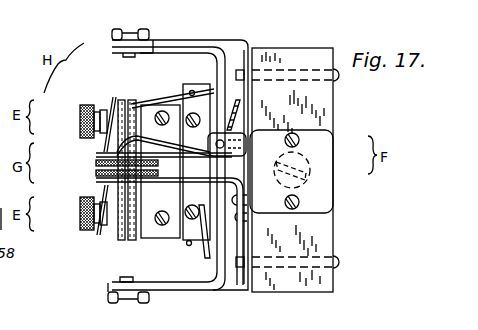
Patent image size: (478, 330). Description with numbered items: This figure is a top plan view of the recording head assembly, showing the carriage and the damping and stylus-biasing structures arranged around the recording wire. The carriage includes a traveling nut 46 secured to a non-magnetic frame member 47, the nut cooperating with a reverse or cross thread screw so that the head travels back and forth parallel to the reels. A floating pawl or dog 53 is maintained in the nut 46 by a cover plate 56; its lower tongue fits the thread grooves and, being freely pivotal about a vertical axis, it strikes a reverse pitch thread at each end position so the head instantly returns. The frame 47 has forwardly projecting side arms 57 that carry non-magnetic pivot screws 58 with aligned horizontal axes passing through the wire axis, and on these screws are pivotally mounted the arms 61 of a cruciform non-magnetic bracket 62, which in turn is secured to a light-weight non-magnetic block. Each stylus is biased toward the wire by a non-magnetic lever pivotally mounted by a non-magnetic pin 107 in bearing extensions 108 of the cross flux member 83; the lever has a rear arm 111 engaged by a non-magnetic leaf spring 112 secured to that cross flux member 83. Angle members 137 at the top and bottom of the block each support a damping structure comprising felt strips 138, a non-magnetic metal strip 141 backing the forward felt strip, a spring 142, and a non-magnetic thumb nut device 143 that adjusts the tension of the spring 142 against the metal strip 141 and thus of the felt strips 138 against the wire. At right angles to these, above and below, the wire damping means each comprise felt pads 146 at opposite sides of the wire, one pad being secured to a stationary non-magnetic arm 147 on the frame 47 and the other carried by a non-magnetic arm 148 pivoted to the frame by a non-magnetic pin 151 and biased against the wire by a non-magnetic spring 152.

The traveling nut 46 is at (338, 110).
The non-magnetic frame member 47 is at (251, 250).
The floating pawl or dog 53 is at (305, 158).
The cover plate 56 is at (322, 183).
The side arms 57 is at (184, 40).
The non-magnetic pivot screws 58 is at (112, 34).
The arms 61 is at (175, 53).
The cruciform non-magnetic bracket 62 is at (214, 62).
The cross flux member 83 is at (214, 228).
The non-magnetic pin 107 is at (195, 93).
The bearing extensions 108 is at (186, 251).
The rear arm 111 is at (201, 241).
The non-magnetic leaf spring 112 is at (223, 75).
The angle members 137 is at (132, 234).
The felt strips 138 is at (128, 100).
The non-magnetic metal strip 141 is at (117, 97).
The spring 142 is at (100, 108).
The non-magnetic thumb nut device 143 is at (80, 112).
The felt pads 146 is at (96, 162).
The stationary non-magnetic arm 147 is at (96, 177).
The non-magnetic arm 148 is at (96, 155).
The non-magnetic pin 151 is at (247, 152).
The non-magnetic spring 152 is at (180, 98).